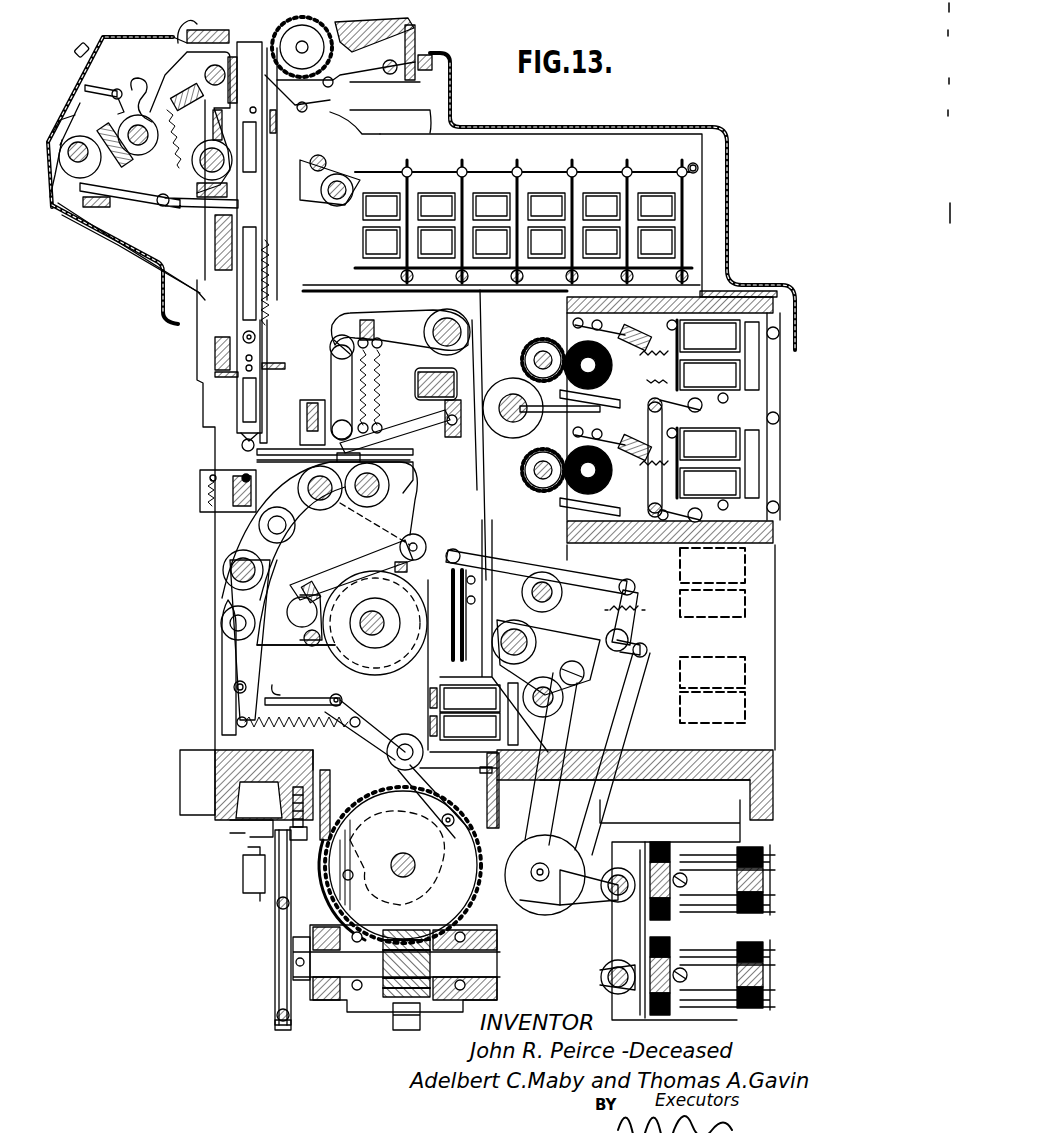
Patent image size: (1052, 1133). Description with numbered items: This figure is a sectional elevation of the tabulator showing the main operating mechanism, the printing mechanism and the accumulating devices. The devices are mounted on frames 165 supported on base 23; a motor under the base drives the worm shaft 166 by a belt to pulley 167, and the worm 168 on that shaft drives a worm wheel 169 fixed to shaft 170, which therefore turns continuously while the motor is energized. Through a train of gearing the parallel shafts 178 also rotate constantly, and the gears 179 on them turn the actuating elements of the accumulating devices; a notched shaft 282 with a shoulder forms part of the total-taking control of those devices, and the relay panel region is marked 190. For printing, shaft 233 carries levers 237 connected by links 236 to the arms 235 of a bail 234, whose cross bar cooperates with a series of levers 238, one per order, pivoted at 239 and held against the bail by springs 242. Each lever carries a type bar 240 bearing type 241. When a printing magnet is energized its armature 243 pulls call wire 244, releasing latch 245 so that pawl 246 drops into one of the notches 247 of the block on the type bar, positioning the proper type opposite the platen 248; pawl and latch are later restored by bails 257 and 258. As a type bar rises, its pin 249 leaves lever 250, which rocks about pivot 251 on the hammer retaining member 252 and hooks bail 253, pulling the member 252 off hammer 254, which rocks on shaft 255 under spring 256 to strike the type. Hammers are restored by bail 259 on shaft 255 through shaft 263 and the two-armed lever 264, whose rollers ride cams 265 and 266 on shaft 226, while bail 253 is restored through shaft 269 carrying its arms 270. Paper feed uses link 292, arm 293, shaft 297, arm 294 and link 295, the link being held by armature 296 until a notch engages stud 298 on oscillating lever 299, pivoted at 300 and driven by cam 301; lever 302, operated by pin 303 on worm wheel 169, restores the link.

The base 23 is at (760, 786).
The frames 165 is at (218, 722).
The worm shaft 166 is at (350, 980).
The pulley 167 is at (283, 1022).
The worm 168 is at (415, 985).
The worm wheel 169 is at (520, 905).
The shaft 170 is at (403, 877).
The parallel shafts 178 is at (522, 355).
The gears 179 is at (522, 365).
The relay panel 190 is at (748, 420).
The shaft 226 is at (395, 545).
The shaft 233 is at (470, 322).
The bail 234 is at (305, 402).
The arms 235 is at (420, 395).
The links 236 is at (333, 376).
The levers 237 is at (387, 317).
The levers 238 is at (298, 443).
The pivot 239 is at (455, 440).
The type bar 240 is at (228, 285).
The type 241 is at (234, 42).
The springs 242 is at (377, 365).
The armature 243 is at (660, 272).
The call wire 244 is at (501, 227).
The latch 245 is at (283, 282).
The pawl 246 is at (240, 293).
The notches 247 is at (270, 313).
The platen 248 is at (318, 30).
The pin 249 is at (215, 236).
The lever 250 is at (125, 205).
The pivot 251 is at (158, 203).
The hammer retaining member 252 is at (158, 160).
The bail 253 is at (83, 167).
The hammer 254 is at (185, 70).
The shaft 255 is at (228, 170).
The spring 256 is at (76, 140).
The bail 257 is at (338, 335).
The bail 258 is at (330, 278).
The bail 259 is at (172, 90).
The shaft 263 is at (318, 490).
The two-armed lever 264 is at (262, 552).
The cam 265 is at (230, 672).
The cam 266 is at (300, 638).
The shaft 269 is at (72, 122).
The arms 270 is at (60, 190).
The notched shaft 282 is at (505, 433).
The link 292 is at (300, 610).
The arm 293 is at (308, 635).
The arm 294 is at (238, 660).
The link 295 is at (303, 696).
The armature 296 is at (447, 670).
The shaft 297 is at (230, 620).
The stud 298 is at (355, 660).
The oscillating lever 299 is at (430, 770).
The pivot 300 is at (392, 766).
The cam 301 is at (452, 814).
The lever 302 is at (365, 730).
The pin 303 is at (318, 880).